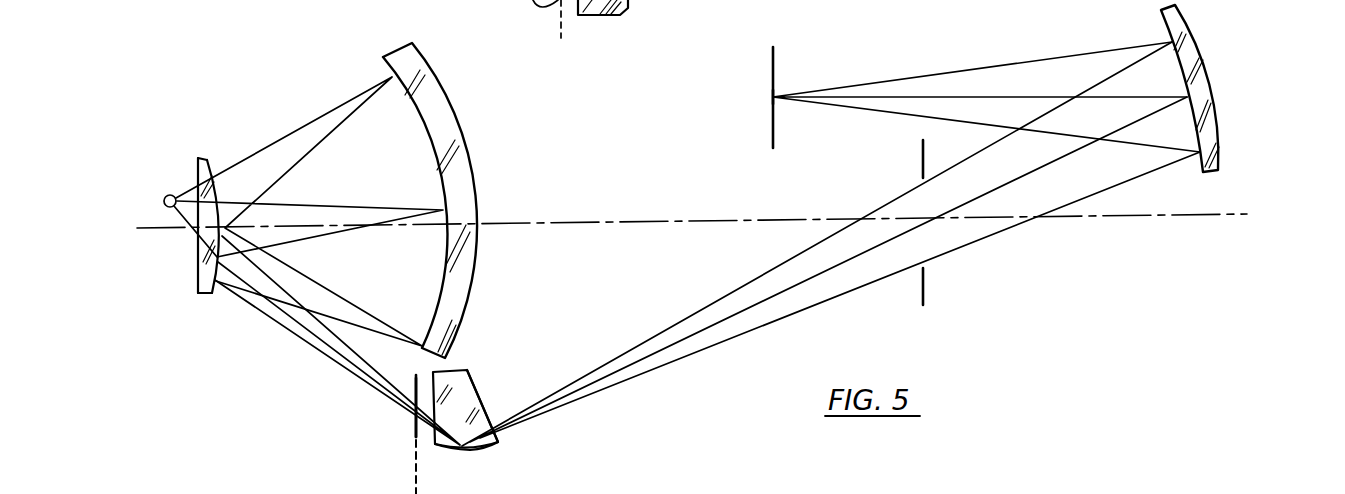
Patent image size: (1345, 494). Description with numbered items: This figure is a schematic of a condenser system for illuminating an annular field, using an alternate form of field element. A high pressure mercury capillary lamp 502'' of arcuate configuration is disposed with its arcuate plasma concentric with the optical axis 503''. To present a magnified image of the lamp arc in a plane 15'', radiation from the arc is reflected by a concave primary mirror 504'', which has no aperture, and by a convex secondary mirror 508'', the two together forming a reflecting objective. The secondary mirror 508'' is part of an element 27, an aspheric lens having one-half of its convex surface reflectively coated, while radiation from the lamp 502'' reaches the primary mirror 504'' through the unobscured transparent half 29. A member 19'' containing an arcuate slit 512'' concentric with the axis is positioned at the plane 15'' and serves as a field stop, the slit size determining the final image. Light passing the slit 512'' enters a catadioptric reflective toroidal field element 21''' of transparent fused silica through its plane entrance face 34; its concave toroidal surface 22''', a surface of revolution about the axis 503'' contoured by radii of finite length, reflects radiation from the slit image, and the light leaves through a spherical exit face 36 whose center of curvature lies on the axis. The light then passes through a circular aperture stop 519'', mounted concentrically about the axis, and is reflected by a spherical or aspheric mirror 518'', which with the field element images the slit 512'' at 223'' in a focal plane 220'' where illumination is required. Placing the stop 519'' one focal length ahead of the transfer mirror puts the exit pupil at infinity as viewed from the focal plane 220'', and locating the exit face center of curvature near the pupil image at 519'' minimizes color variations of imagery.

The high pressure mercury capillary lamp 502'' is at (136, 175).
The element 27 is at (199, 258).
The transparent half 29 is at (213, 186).
The convex secondary mirror 508'' is at (203, 253).
The concave primary mirror 504'' is at (413, 200).
The optical axis 503'' is at (692, 207).
The arcuate slit 512'' is at (393, 388).
The member 19'' is at (378, 407).
The plane 15'' is at (378, 467).
The catadioptric reflective toroidal field element 21''' is at (489, 386).
The spherical exit face 36 is at (465, 422).
The concave toroidal surface 22''' is at (529, 450).
The plane entrance face 34 is at (433, 443).
The focal plane 220'' is at (716, 97).
The image of slit 223'' is at (716, 114).
The aperture stop 519'' is at (974, 231).
The spherical or aspheric mirror 518'' is at (1220, 86).